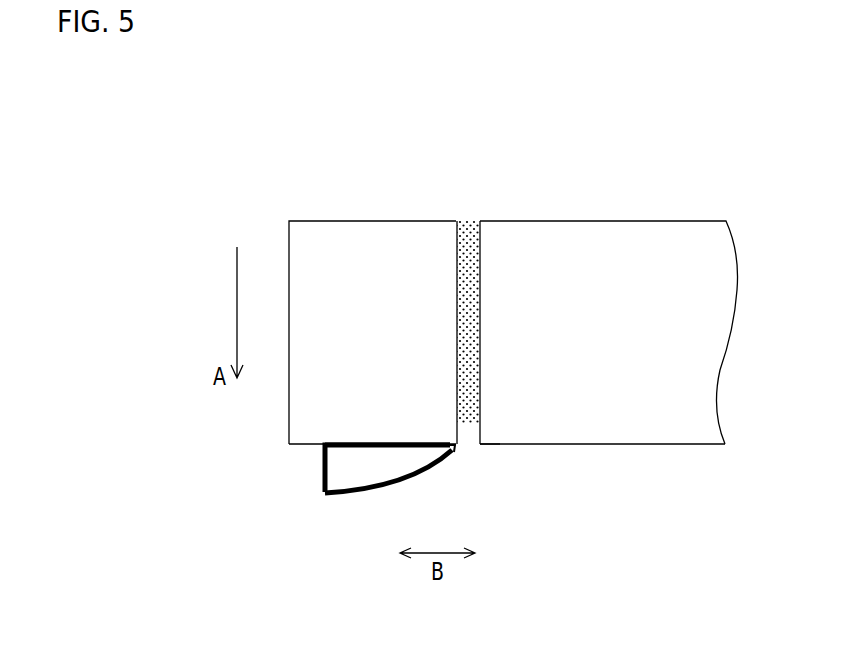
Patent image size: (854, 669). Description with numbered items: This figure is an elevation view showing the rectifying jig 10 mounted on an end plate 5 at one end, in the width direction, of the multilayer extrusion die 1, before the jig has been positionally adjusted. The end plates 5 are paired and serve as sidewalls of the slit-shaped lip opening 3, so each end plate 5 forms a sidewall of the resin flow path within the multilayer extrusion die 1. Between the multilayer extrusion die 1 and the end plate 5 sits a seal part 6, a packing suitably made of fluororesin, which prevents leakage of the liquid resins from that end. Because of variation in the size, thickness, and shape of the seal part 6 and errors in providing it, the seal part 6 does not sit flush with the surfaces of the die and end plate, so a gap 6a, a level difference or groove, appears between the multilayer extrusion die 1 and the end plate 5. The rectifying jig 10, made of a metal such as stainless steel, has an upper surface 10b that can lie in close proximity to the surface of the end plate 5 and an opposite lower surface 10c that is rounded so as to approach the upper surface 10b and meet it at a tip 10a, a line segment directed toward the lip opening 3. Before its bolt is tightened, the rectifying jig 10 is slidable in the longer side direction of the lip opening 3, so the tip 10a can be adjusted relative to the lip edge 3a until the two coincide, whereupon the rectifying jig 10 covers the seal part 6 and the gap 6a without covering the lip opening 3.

The multilayer extrusion die 1 is at (601, 205).
The lip opening 3 is at (622, 445).
The lip edge 3a is at (478, 447).
The end plate 5 is at (386, 205).
The seal part 6 is at (466, 221).
The gap 6a is at (464, 427).
The rectifying jig 10 is at (357, 470).
The tip 10a is at (452, 456).
The upper surface 10b is at (373, 443).
The lower surface 10c is at (420, 493).